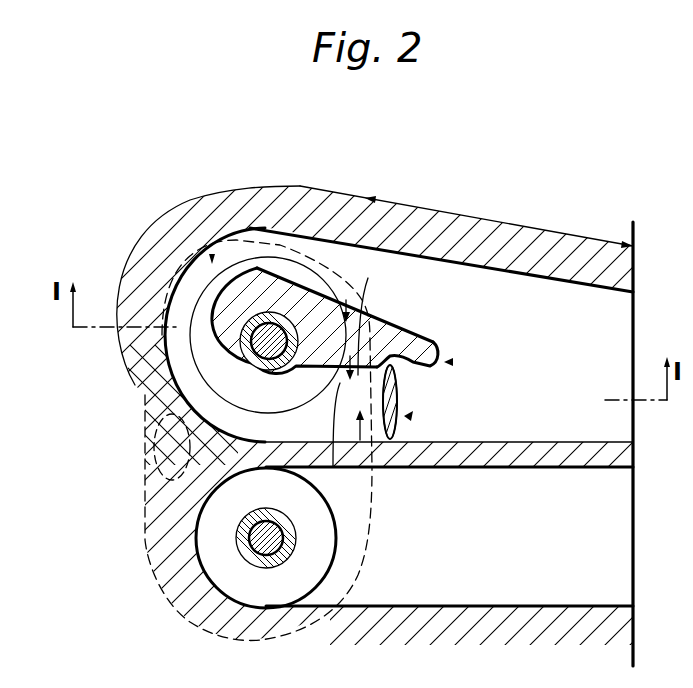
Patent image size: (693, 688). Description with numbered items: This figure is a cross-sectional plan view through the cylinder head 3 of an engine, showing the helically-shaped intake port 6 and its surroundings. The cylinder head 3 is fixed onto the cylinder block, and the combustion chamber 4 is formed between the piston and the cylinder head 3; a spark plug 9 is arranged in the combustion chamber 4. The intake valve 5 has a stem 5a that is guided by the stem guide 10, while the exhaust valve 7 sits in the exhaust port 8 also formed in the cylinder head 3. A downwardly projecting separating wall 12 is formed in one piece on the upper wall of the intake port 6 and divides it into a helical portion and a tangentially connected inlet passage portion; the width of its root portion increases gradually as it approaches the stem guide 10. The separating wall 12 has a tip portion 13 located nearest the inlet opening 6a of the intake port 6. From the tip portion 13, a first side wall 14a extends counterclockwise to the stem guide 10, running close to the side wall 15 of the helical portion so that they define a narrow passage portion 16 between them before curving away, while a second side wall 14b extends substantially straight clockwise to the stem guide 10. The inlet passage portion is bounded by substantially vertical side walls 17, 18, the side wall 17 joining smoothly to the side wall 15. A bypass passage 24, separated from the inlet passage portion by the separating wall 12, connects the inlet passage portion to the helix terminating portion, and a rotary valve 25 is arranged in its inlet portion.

The cylinder head 3 is at (604, 628).
The combustion chamber 4 is at (150, 560).
The intake valve 5 is at (277, 263).
The stem 5a is at (289, 371).
The helically-shaped intake port 6 is at (546, 358).
The inlet opening 6a is at (636, 347).
The exhaust valve 7 is at (254, 600).
The exhaust port 8 is at (509, 553).
The spark plug 9 is at (152, 481).
The stem guide 10 is at (244, 359).
The separating wall 12 is at (405, 345).
The tip portion 13 is at (452, 362).
The first side wall 14a is at (360, 312).
The second side wall 14b is at (333, 467).
The side wall of the helical portion 15 is at (184, 262).
The narrow passage portion 16 is at (211, 254).
The side wall of the inlet passage portion 17 is at (551, 278).
The side wall of the inlet passage portion 18 is at (549, 441).
The bypass passage 24 is at (372, 467).
The rotary valve 25 is at (411, 418).